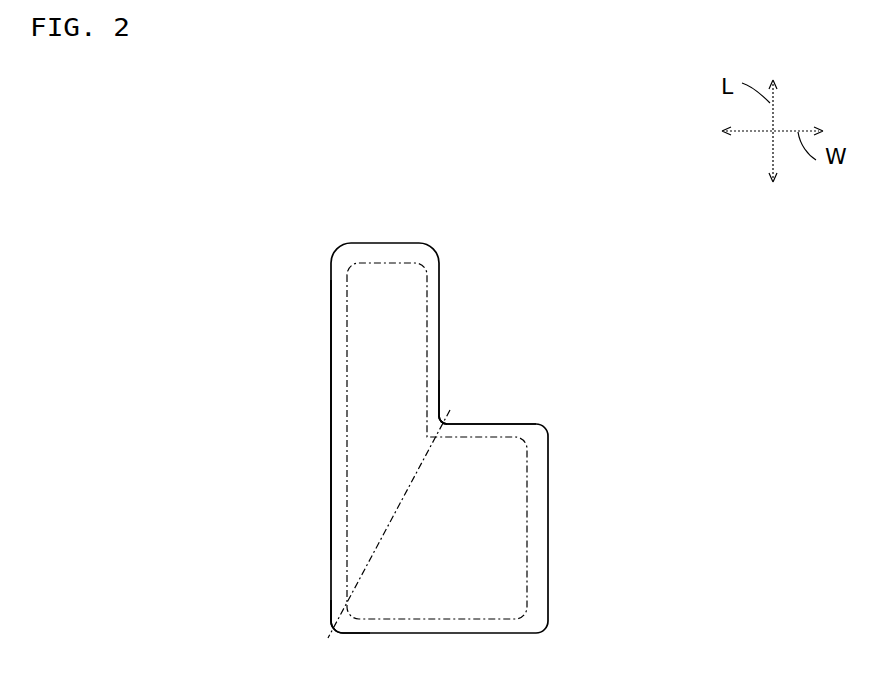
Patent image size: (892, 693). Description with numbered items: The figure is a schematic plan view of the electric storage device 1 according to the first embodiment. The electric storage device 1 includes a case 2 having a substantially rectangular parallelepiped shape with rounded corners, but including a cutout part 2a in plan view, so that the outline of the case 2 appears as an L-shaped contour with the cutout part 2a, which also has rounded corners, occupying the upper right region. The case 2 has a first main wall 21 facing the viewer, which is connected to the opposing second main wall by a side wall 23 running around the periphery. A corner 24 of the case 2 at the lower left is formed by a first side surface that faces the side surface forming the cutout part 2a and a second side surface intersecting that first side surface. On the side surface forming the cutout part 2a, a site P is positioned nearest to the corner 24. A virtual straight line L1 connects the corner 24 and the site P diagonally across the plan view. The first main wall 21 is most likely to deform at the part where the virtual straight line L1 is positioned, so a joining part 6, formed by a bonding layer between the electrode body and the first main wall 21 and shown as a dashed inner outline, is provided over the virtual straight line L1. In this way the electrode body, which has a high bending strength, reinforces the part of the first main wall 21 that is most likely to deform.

The electric storage device 1 is at (492, 208).
The case 2 is at (549, 503).
The cutout part 2a is at (440, 371).
The joining part 6 is at (388, 261).
The first main wall 21 is at (342, 351).
The side wall 23 is at (331, 408).
The corner 24 is at (334, 628).
The site P is at (445, 418).
The virtual straight line L1 is at (383, 537).